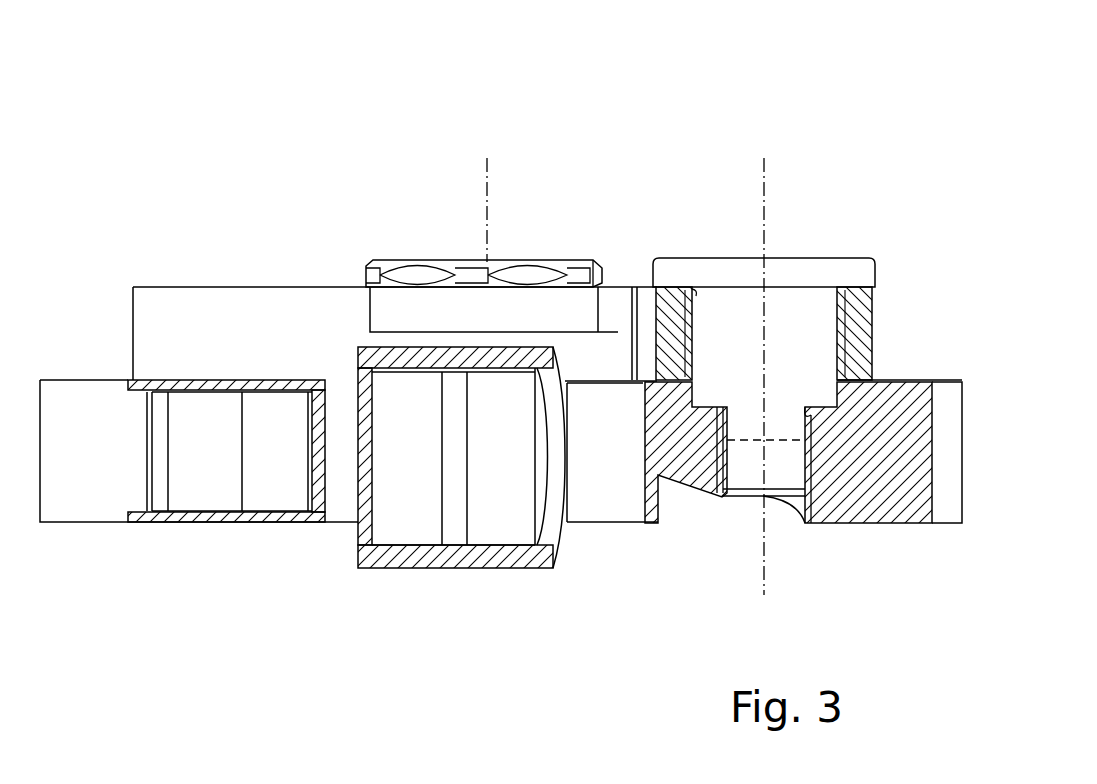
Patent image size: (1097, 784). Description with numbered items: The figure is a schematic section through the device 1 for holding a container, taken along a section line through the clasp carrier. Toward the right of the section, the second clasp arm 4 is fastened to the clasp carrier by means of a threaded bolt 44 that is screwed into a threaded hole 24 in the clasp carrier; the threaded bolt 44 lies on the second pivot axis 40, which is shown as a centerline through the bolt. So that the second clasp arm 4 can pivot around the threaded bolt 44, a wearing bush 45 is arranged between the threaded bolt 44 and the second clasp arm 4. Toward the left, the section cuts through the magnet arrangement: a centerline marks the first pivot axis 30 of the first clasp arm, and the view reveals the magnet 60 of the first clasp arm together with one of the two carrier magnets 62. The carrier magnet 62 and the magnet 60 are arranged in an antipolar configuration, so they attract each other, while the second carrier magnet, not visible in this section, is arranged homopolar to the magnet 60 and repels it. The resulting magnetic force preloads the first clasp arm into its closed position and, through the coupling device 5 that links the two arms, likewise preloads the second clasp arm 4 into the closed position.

The device 1 is at (866, 124).
The second clasp arm 4 is at (858, 315).
The coupling device 5 is at (627, 245).
The threaded hole 24 is at (810, 425).
The first pivot axis 30 is at (488, 192).
The second pivot axis 40 is at (762, 190).
The threaded bolt 44 is at (808, 278).
The wearing bush 45 is at (688, 312).
The magnet 60 is at (468, 520).
The carrier magnet 62 is at (243, 487).